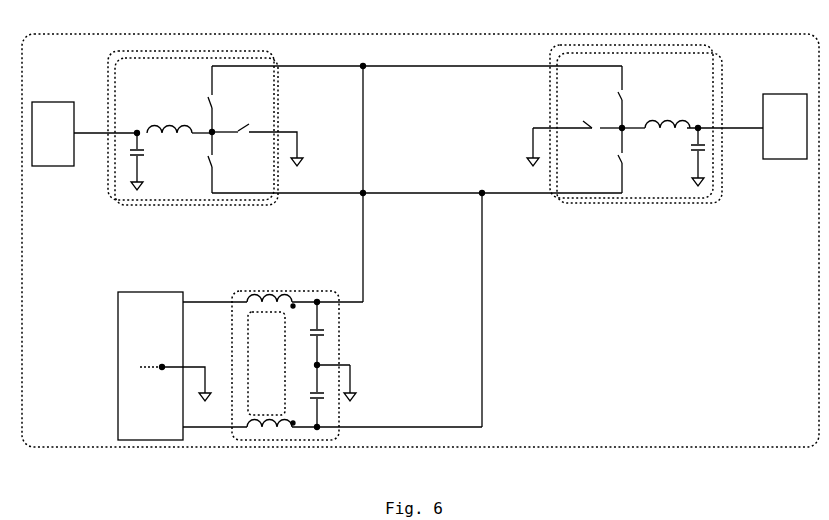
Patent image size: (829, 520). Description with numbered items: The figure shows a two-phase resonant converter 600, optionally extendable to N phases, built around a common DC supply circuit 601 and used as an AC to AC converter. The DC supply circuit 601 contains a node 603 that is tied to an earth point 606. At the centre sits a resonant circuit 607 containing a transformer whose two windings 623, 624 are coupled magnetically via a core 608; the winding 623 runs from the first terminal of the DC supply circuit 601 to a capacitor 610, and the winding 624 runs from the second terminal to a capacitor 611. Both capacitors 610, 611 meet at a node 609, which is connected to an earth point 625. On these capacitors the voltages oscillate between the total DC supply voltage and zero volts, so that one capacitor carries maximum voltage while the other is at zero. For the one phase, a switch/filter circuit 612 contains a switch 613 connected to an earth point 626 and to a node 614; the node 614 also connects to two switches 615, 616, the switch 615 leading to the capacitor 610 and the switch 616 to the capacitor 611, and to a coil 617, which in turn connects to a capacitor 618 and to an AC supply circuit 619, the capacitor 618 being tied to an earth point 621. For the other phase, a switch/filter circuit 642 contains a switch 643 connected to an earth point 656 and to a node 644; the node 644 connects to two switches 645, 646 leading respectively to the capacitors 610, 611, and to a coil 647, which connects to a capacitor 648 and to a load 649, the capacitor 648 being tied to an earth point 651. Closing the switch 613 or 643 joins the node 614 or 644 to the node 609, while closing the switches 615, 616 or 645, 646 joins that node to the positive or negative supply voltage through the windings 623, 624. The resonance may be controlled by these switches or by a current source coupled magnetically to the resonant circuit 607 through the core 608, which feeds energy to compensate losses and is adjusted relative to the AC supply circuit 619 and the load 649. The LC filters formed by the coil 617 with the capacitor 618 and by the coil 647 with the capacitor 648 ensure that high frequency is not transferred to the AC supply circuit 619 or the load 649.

The 2-phase resonant converter 600 is at (405, 34).
The DC supply circuit 601 is at (150, 284).
The node 603 is at (161, 366).
The earth point 606 is at (201, 402).
The resonant circuit 607 is at (283, 284).
The core 608 is at (262, 358).
The node 609 is at (316, 368).
The capacitor 610 is at (309, 335).
The capacitor 611 is at (312, 395).
The switch/filter circuit 612 is at (200, 56).
The switch 613 is at (258, 118).
The node 614 is at (215, 135).
The switch 615 is at (209, 100).
The switch 616 is at (208, 165).
The coil 617 is at (172, 128).
The capacitor 618 is at (147, 151).
The AC supply circuit 619 is at (62, 102).
The earth point 621 is at (143, 188).
The winding 623 is at (265, 309).
The winding 624 is at (265, 416).
The earth point 625 is at (353, 402).
The earth point 626 is at (299, 166).
The switch/filter circuit 642 is at (640, 46).
The switch 643 is at (590, 124).
The node 644 is at (620, 131).
The switch 645 is at (623, 96).
The switch 646 is at (623, 160).
The coil 647 is at (668, 123).
The capacitor 648 is at (690, 148).
The load 649 is at (785, 94).
The earth point 651 is at (694, 182).
The earth point 656 is at (531, 166).